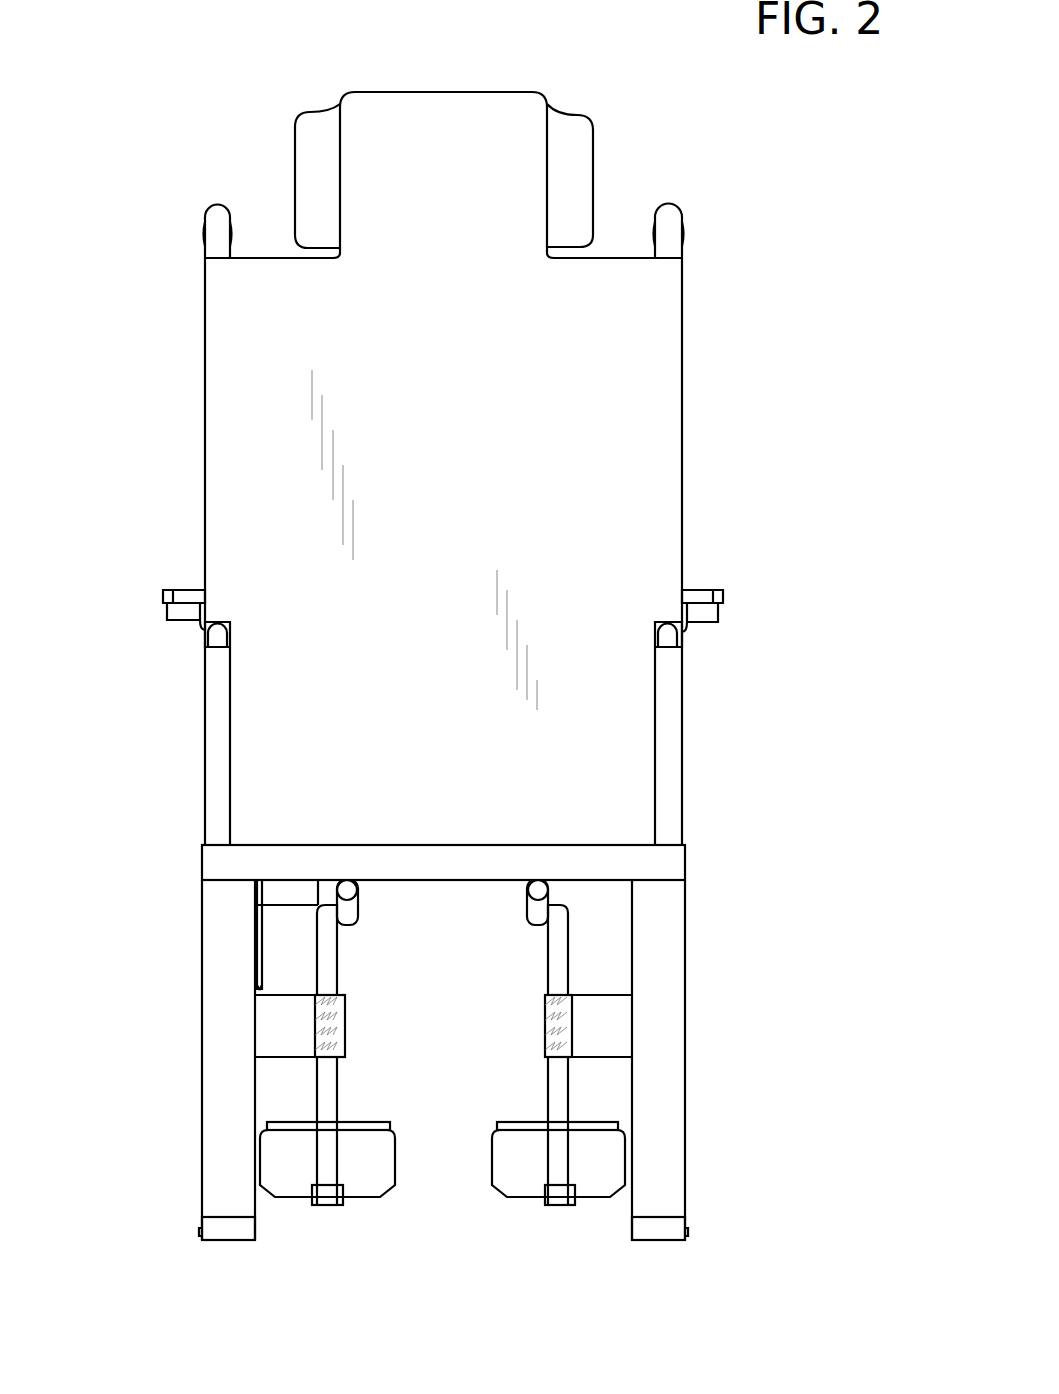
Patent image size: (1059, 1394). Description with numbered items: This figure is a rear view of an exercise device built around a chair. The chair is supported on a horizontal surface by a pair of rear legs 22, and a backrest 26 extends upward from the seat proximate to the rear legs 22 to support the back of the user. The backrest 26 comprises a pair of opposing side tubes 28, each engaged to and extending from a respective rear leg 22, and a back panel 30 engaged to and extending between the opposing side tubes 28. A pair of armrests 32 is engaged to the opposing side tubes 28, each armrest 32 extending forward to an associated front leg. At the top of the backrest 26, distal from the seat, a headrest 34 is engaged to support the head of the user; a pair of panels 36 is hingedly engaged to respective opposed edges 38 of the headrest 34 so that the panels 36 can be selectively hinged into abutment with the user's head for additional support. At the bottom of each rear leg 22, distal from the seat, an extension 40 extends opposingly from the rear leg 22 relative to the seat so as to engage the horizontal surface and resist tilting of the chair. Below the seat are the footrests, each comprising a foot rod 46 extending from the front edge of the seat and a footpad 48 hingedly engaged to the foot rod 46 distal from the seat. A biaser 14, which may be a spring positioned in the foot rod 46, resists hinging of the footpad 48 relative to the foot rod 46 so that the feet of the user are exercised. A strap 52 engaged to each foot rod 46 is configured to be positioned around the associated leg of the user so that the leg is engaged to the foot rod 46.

The biaser 14 is at (525, 1205).
The rear leg 22 is at (663, 1018).
The backrest 26 is at (605, 478).
The opposing side tube 28 is at (216, 242).
The back panel 30 is at (578, 413).
The armrest 32 is at (692, 588).
The headrest 34 is at (492, 150).
The panel 36 is at (308, 188).
The opposed edge 38 is at (547, 175).
The extension 40 is at (237, 1233).
The foot rod 46 is at (560, 953).
The footpad 48 is at (605, 1160).
The strap 52 is at (598, 1033).